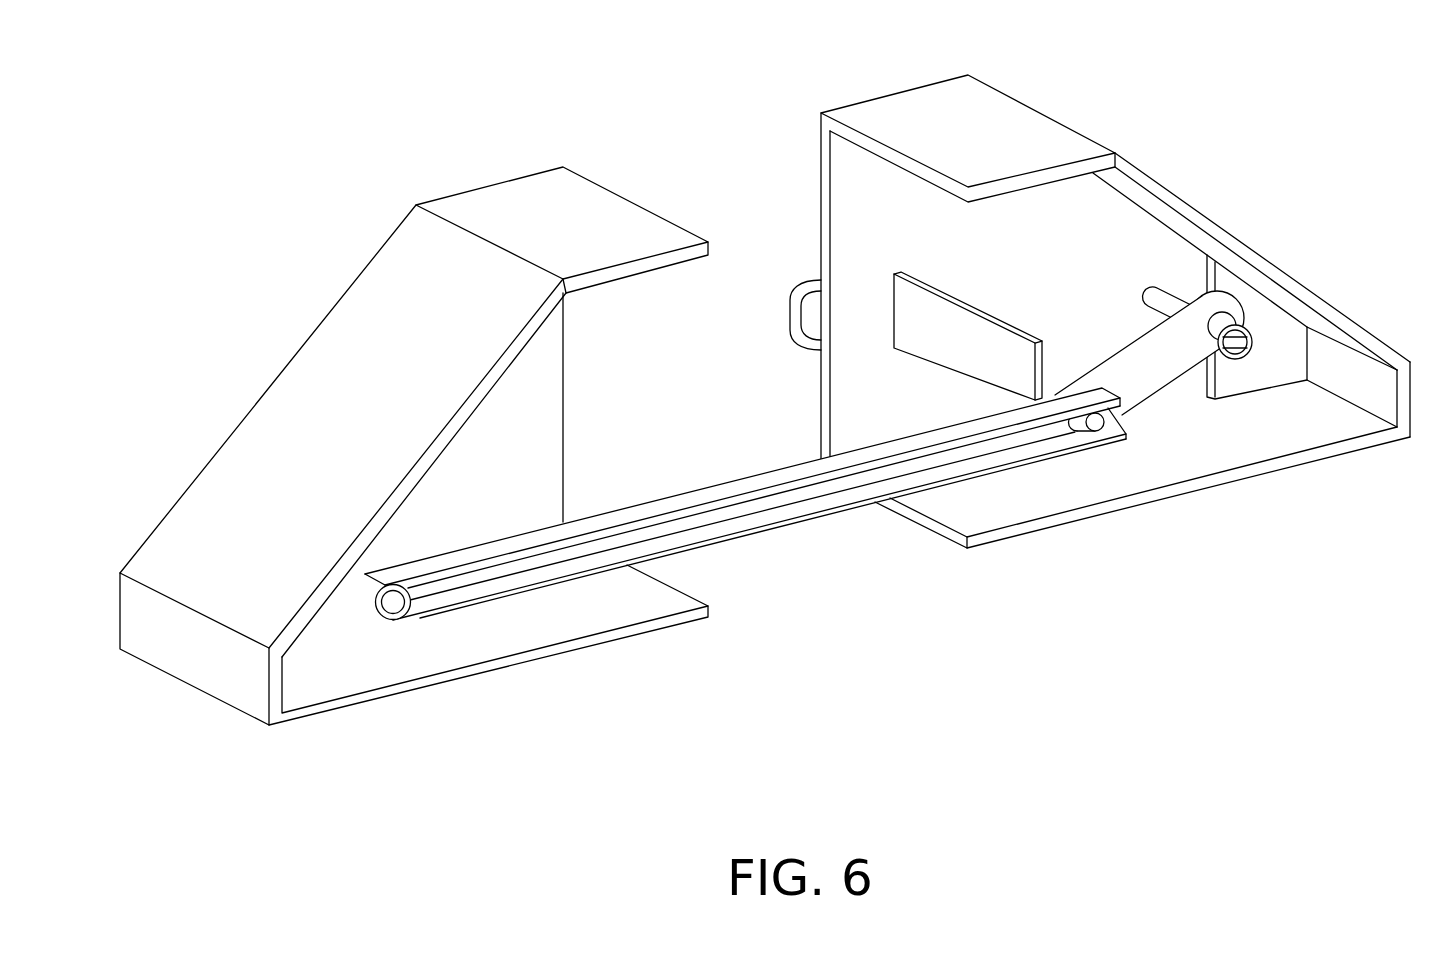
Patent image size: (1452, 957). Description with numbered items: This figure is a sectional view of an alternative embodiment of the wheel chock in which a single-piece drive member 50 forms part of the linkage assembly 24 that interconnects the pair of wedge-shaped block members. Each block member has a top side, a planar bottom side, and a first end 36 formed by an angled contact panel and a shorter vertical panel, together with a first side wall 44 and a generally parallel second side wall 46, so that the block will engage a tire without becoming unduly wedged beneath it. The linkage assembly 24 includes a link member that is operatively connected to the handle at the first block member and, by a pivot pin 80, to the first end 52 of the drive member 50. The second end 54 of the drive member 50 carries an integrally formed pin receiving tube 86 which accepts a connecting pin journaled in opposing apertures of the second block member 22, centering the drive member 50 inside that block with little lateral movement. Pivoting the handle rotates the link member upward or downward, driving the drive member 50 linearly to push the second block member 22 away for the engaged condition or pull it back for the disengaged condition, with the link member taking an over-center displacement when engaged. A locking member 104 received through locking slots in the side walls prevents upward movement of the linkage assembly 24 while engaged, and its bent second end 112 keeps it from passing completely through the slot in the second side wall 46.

The second block member 22 is at (414, 442).
The linkage assembly 24 is at (784, 522).
The first end 36 is at (197, 455).
The first side wall 44 is at (556, 353).
The second side wall 46 is at (838, 183).
The drive member 50 is at (738, 513).
The first end of drive member 52 is at (1032, 448).
The second end of drive member 54 is at (465, 607).
The pivot pin 80 is at (1108, 432).
The pin receiving tube 86 is at (363, 594).
The locking member 104 is at (905, 345).
The second end of locking member 112 is at (806, 318).